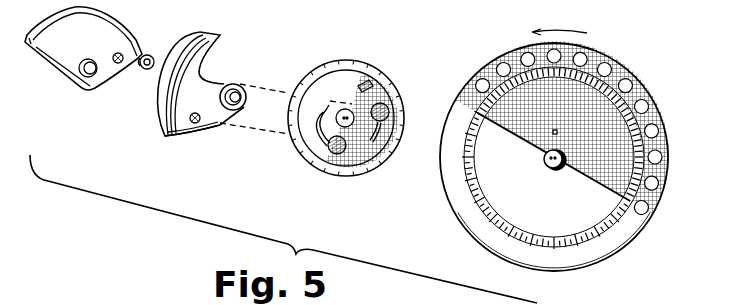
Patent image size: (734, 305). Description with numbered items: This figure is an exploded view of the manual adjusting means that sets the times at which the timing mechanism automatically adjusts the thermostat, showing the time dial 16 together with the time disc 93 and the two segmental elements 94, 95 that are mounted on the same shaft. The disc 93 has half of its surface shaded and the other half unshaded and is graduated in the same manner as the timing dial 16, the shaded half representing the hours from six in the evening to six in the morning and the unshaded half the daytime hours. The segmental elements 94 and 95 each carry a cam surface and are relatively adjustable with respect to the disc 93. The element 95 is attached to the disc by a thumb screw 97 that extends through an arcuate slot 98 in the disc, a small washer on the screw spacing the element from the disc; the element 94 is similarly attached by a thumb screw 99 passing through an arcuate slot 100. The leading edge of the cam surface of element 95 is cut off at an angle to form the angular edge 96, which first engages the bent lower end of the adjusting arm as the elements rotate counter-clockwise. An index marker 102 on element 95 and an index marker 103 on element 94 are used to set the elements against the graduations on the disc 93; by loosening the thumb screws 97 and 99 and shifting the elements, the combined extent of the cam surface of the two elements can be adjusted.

The timing dial 16 is at (645, 98).
The time disc 93 is at (371, 66).
The segmental element 94 is at (66, 60).
The segmental element 95 is at (210, 113).
The angular edge 96 is at (163, 136).
The thumb screw 97 is at (341, 154).
The arcuate slot 98 is at (330, 103).
The thumb screw 99 is at (388, 107).
The arcuate slot 100 is at (358, 85).
The index marker 102 is at (162, 120).
The index marker 103 is at (141, 44).